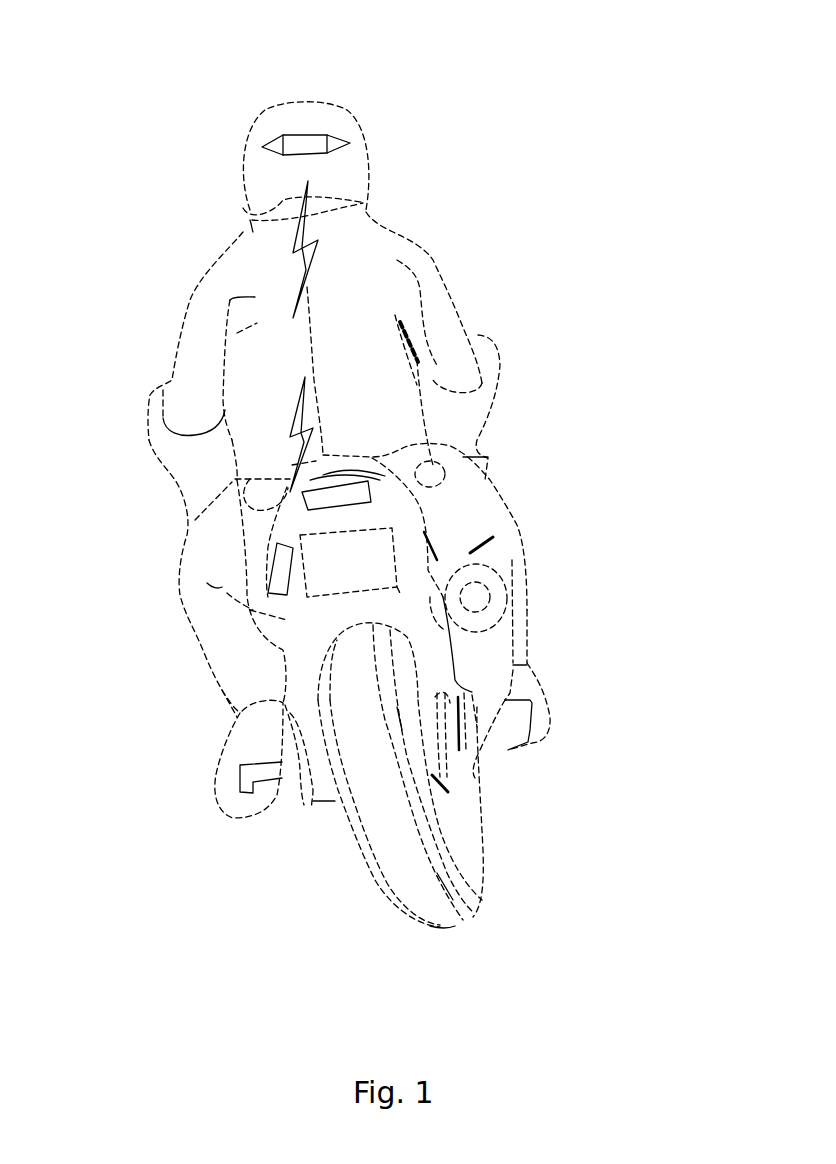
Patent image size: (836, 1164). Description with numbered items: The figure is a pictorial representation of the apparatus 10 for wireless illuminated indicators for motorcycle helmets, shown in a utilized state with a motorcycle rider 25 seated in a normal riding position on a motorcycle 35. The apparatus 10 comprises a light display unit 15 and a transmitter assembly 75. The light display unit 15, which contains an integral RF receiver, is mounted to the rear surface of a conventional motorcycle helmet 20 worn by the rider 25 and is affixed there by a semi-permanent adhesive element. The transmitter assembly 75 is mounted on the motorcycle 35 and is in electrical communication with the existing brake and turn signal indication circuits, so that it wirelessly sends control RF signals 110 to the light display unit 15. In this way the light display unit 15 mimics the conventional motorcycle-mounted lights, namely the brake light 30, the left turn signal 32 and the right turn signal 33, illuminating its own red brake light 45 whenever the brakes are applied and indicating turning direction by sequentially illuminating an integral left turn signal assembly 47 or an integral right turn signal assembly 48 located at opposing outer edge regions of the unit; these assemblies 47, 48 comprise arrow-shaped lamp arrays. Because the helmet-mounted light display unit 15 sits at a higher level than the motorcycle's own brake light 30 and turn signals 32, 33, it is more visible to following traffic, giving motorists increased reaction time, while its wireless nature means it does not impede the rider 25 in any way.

The apparatus 10 is at (678, 767).
The light display unit 15 is at (252, 119).
The motorcycle helmet 20 is at (305, 103).
The motorcycle rider 25 is at (438, 297).
The brake light 30 is at (300, 495).
The left turn signal 32 is at (224, 492).
The right turn signal 33 is at (437, 470).
The motorcycle 35 is at (390, 613).
The brake light 45 is at (310, 143).
The left turn signal assembly 47 is at (262, 147).
The right turn signal assembly 48 is at (283, 144).
The transmitter assembly 75 is at (250, 562).
The RF signal 110 is at (290, 436).